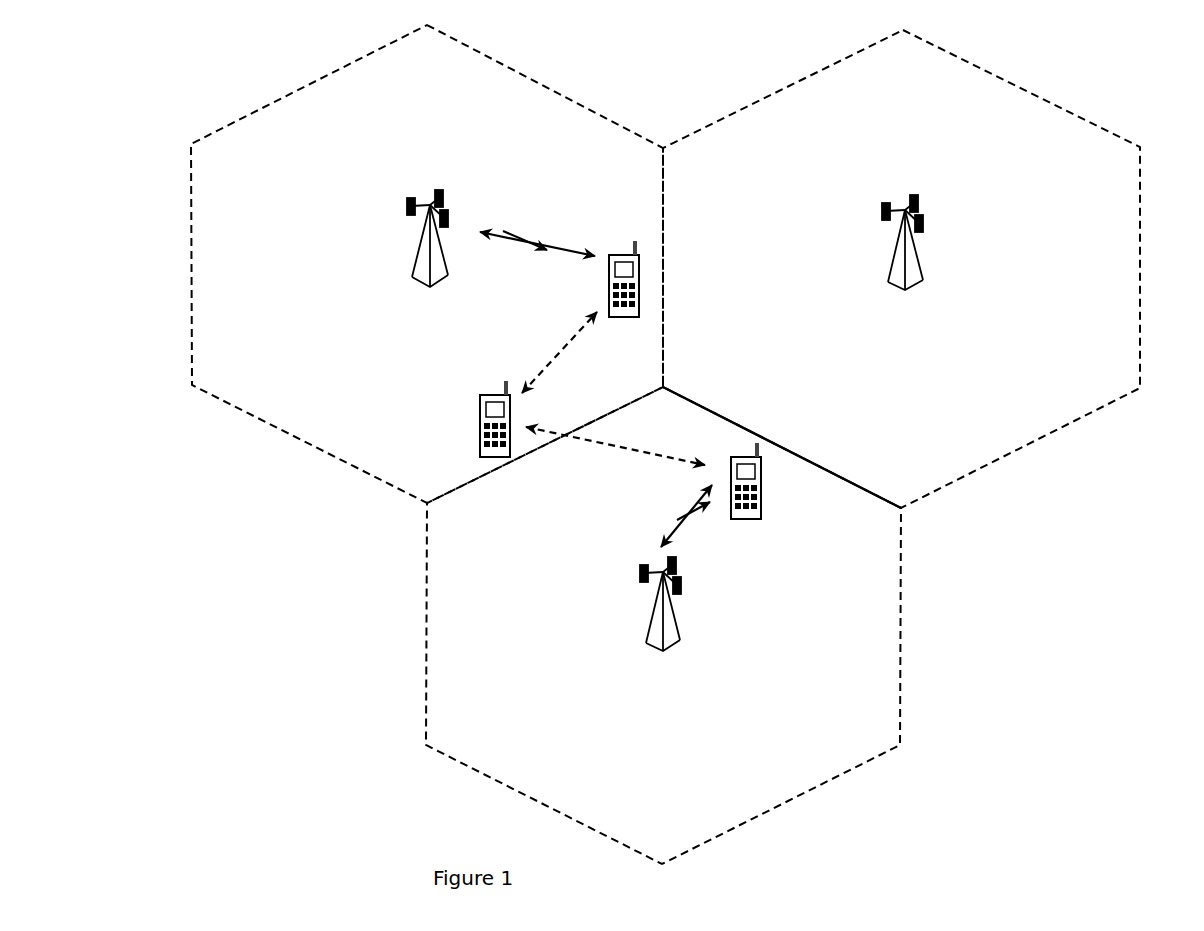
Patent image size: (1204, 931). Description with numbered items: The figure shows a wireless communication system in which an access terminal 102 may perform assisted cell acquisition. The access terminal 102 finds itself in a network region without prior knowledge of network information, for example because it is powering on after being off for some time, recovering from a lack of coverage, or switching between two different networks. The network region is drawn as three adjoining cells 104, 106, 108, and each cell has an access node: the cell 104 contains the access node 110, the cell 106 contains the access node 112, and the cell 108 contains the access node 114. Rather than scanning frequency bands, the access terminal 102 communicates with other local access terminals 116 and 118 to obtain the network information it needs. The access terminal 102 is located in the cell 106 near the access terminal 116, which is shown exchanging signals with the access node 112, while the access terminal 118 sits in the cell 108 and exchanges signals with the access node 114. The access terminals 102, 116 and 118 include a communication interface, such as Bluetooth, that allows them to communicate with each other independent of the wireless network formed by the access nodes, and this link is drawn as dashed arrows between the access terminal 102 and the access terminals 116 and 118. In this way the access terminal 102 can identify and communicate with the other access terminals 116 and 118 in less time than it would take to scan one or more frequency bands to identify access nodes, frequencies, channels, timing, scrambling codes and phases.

The access terminal 102 is at (478, 440).
The cell 104 is at (978, 71).
The cell 106 is at (540, 85).
The cell 108 is at (901, 598).
The access node 110 is at (917, 258).
The access node 112 is at (418, 243).
The access node 114 is at (650, 627).
The access terminal 116 is at (620, 254).
The access terminal 118 is at (762, 505).